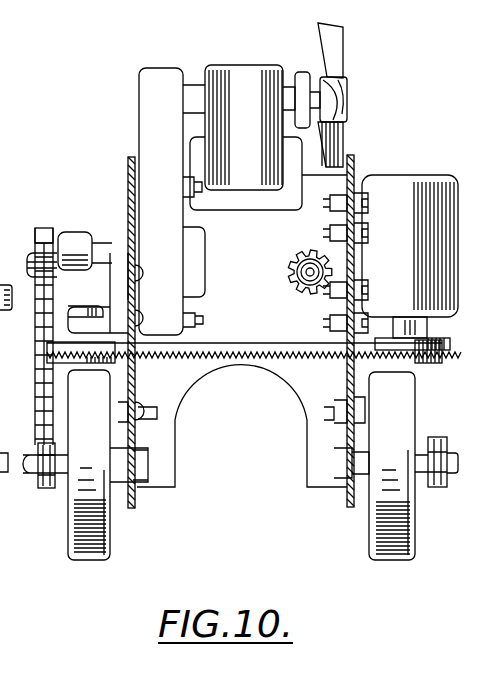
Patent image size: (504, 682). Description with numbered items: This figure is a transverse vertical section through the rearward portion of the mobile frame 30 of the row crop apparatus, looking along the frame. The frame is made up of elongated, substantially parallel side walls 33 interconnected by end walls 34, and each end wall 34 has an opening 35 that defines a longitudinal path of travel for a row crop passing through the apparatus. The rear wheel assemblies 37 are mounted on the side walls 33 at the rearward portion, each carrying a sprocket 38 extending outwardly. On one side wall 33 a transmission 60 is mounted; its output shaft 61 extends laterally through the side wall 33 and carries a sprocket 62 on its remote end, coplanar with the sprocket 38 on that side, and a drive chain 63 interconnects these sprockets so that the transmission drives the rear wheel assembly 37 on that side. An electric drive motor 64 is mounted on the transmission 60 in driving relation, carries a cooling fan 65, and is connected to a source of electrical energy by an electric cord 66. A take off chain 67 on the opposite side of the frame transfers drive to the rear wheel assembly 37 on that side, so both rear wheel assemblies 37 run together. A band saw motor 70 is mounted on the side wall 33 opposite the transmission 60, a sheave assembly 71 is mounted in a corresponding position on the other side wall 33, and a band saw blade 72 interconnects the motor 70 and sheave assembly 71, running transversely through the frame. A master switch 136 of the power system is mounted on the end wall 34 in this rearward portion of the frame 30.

The mobile frame 30 is at (362, 149).
The side walls 33 is at (343, 383).
The end walls 34 is at (265, 262).
The opening 35 is at (193, 378).
The rear wheel assemblies 37 is at (110, 538).
The sprocket 38 is at (40, 465).
The transmission 60 is at (152, 118).
The output shaft 61 is at (106, 245).
The sprocket 62 is at (28, 245).
The drive chain 63 is at (56, 230).
The electric drive motor 64 is at (244, 82).
The cooling fan 65 is at (344, 52).
The electric cord 66 is at (312, 262).
The take off chain 67 is at (456, 477).
The band saw motor 70 is at (400, 190).
The sheave assembly 71 is at (90, 364).
The band saw blade 72 is at (235, 352).
The master switch 136 is at (190, 275).